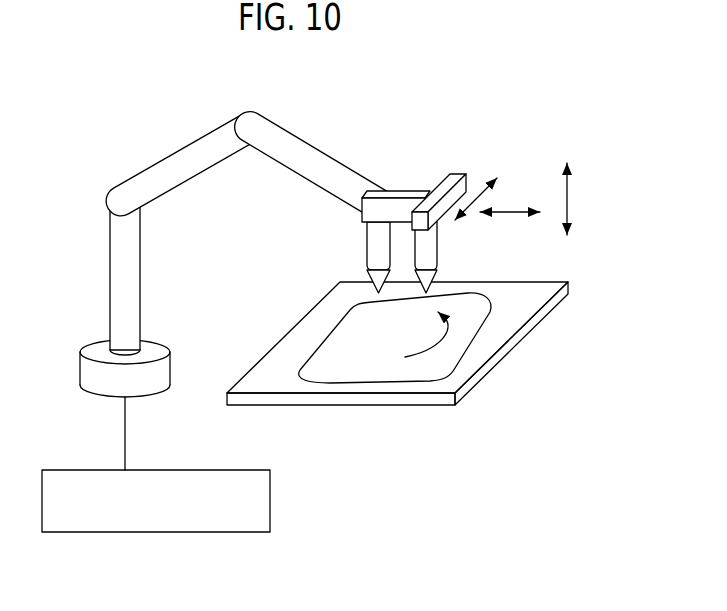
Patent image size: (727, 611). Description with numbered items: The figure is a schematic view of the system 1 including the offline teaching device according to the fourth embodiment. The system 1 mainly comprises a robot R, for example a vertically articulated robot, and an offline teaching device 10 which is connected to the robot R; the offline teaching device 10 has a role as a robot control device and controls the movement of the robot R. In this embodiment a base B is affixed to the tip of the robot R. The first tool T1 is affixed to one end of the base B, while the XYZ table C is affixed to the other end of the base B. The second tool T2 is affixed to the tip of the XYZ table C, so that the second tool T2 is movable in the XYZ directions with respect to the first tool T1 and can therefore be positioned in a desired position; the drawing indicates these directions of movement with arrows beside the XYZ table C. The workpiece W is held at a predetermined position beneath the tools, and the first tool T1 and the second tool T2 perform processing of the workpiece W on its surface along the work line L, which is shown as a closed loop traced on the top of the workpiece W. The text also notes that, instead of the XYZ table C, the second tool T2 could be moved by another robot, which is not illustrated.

The system 1 is at (333, 298).
The robot R is at (122, 273).
The base B is at (405, 197).
The XYZ table C is at (476, 160).
The first tool T1 is at (373, 252).
The second tool T2 is at (427, 242).
The work line L is at (452, 358).
The workpiece W is at (425, 400).
The offline teaching device 10 is at (270, 502).